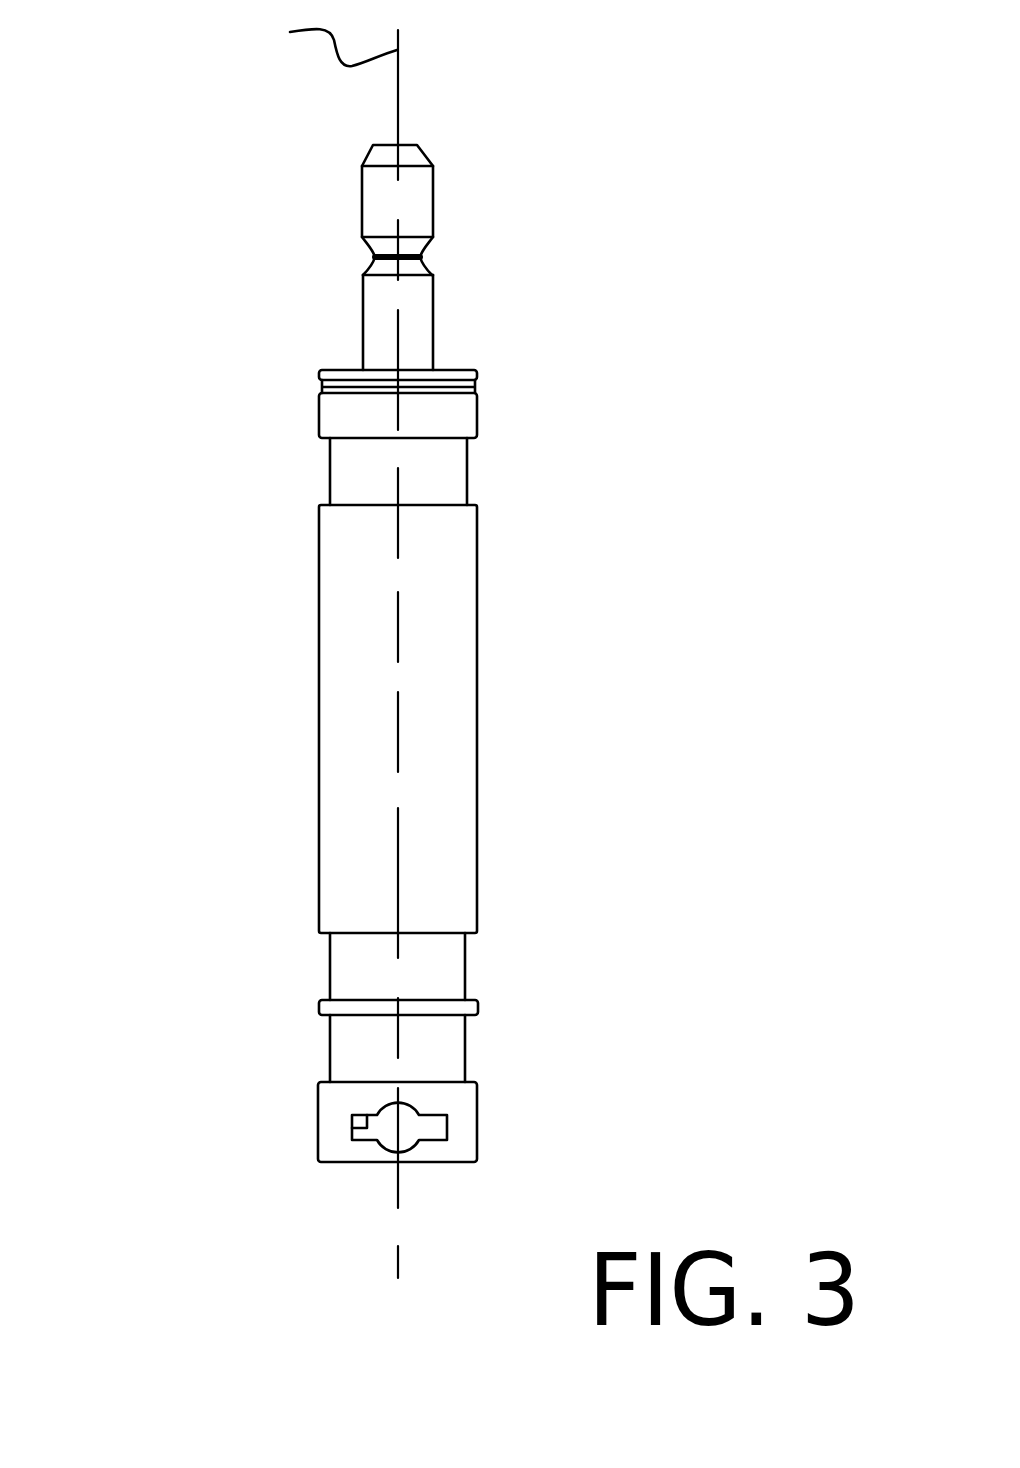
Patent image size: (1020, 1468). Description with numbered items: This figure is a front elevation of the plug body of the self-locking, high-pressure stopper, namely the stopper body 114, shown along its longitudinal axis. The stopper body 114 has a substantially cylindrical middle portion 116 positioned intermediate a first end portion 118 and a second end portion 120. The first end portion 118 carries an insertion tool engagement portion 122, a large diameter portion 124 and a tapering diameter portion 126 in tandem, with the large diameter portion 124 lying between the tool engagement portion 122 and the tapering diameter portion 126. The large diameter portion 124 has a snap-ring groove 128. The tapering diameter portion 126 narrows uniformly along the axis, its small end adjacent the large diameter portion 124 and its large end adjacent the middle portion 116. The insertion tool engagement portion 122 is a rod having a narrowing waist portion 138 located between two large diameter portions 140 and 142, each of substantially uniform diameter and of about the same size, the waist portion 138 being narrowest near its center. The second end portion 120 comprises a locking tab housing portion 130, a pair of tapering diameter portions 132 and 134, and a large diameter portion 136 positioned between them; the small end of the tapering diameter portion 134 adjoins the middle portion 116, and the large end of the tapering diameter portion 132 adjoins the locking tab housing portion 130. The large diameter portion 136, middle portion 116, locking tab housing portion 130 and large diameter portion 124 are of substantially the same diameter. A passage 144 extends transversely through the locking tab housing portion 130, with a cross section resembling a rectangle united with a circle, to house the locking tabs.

The stopper body 114 is at (535, 60).
The middle portion 116 is at (453, 615).
The first end portion 118 is at (500, 315).
The second end portion 120 is at (502, 1010).
The insertion tool engagement portion 122 is at (460, 190).
The large diameter portion 124 is at (448, 412).
The tapering diameter portion 126 is at (345, 472).
The snap-ring groove 128 is at (320, 388).
The locking tab housing portion 130 is at (478, 1118).
The tapering diameter portion 132 is at (347, 1040).
The tapering diameter portion 134 is at (345, 968).
The large diameter portion 136 is at (320, 1006).
The waist portion 138 is at (372, 257).
The large diameter portion 140 is at (372, 316).
The large diameter portion 142 is at (375, 180).
The passage 144 is at (353, 1130).